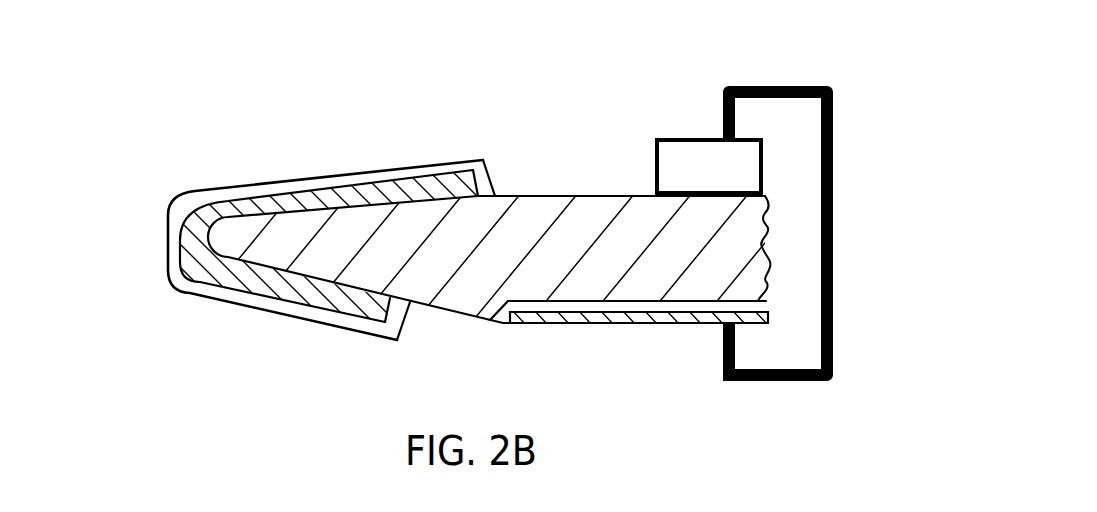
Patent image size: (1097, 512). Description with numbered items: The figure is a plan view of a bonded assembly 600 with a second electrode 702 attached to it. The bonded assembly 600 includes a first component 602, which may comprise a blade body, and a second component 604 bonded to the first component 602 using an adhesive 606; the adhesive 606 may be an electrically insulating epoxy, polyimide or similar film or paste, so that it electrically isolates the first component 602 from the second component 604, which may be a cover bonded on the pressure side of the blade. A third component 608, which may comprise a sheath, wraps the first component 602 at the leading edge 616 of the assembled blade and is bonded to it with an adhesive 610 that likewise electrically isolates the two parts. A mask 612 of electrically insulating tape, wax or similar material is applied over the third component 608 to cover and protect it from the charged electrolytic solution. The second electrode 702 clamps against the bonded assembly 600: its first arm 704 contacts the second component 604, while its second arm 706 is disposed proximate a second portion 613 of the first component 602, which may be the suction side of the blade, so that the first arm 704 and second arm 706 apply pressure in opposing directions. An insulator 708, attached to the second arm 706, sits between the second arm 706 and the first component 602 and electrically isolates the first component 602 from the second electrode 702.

The bonded assembly 600 is at (183, 128).
The first component 602 is at (521, 262).
The second component 604 is at (632, 322).
The adhesive 606 is at (678, 308).
The third component 608 is at (196, 222).
The adhesive 610 is at (352, 295).
The mask 612 is at (484, 174).
The second portion 613 is at (607, 196).
The leading edge 616 is at (166, 256).
The second electrode 702 is at (843, 207).
The first arm 704 is at (733, 347).
The second arm 706 is at (724, 108).
The insulator 708 is at (678, 162).